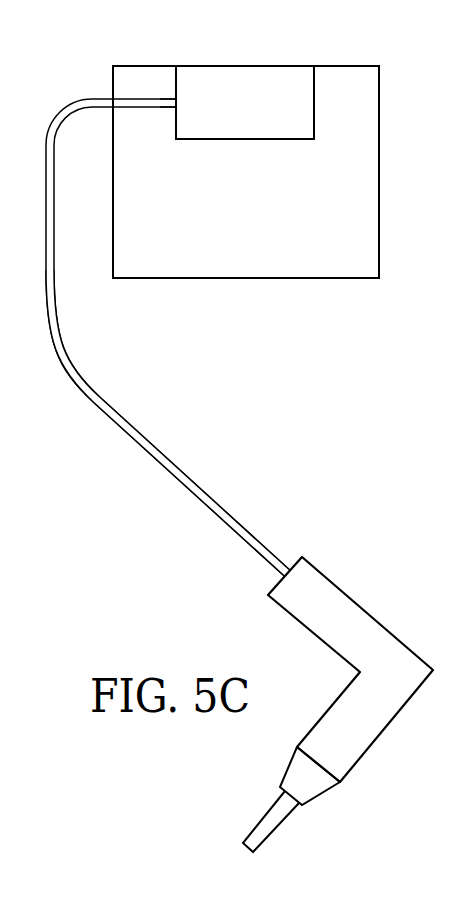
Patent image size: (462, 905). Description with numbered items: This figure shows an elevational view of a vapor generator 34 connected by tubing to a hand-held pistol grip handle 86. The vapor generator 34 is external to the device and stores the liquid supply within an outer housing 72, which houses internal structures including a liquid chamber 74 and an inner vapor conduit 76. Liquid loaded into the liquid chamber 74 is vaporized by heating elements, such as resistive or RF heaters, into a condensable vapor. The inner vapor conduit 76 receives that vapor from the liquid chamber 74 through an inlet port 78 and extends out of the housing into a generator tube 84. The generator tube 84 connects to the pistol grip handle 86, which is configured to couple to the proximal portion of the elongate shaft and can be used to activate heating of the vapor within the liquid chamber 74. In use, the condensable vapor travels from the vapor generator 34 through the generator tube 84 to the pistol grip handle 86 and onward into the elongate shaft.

The vapor generator 34 is at (382, 172).
The outer housing 72 is at (325, 280).
The liquid chamber 74 is at (270, 77).
The inner vapor conduit 76 is at (133, 98).
The inlet port 78 is at (173, 109).
The generator tube 84 is at (167, 462).
The pistol grip handle 86 is at (345, 590).